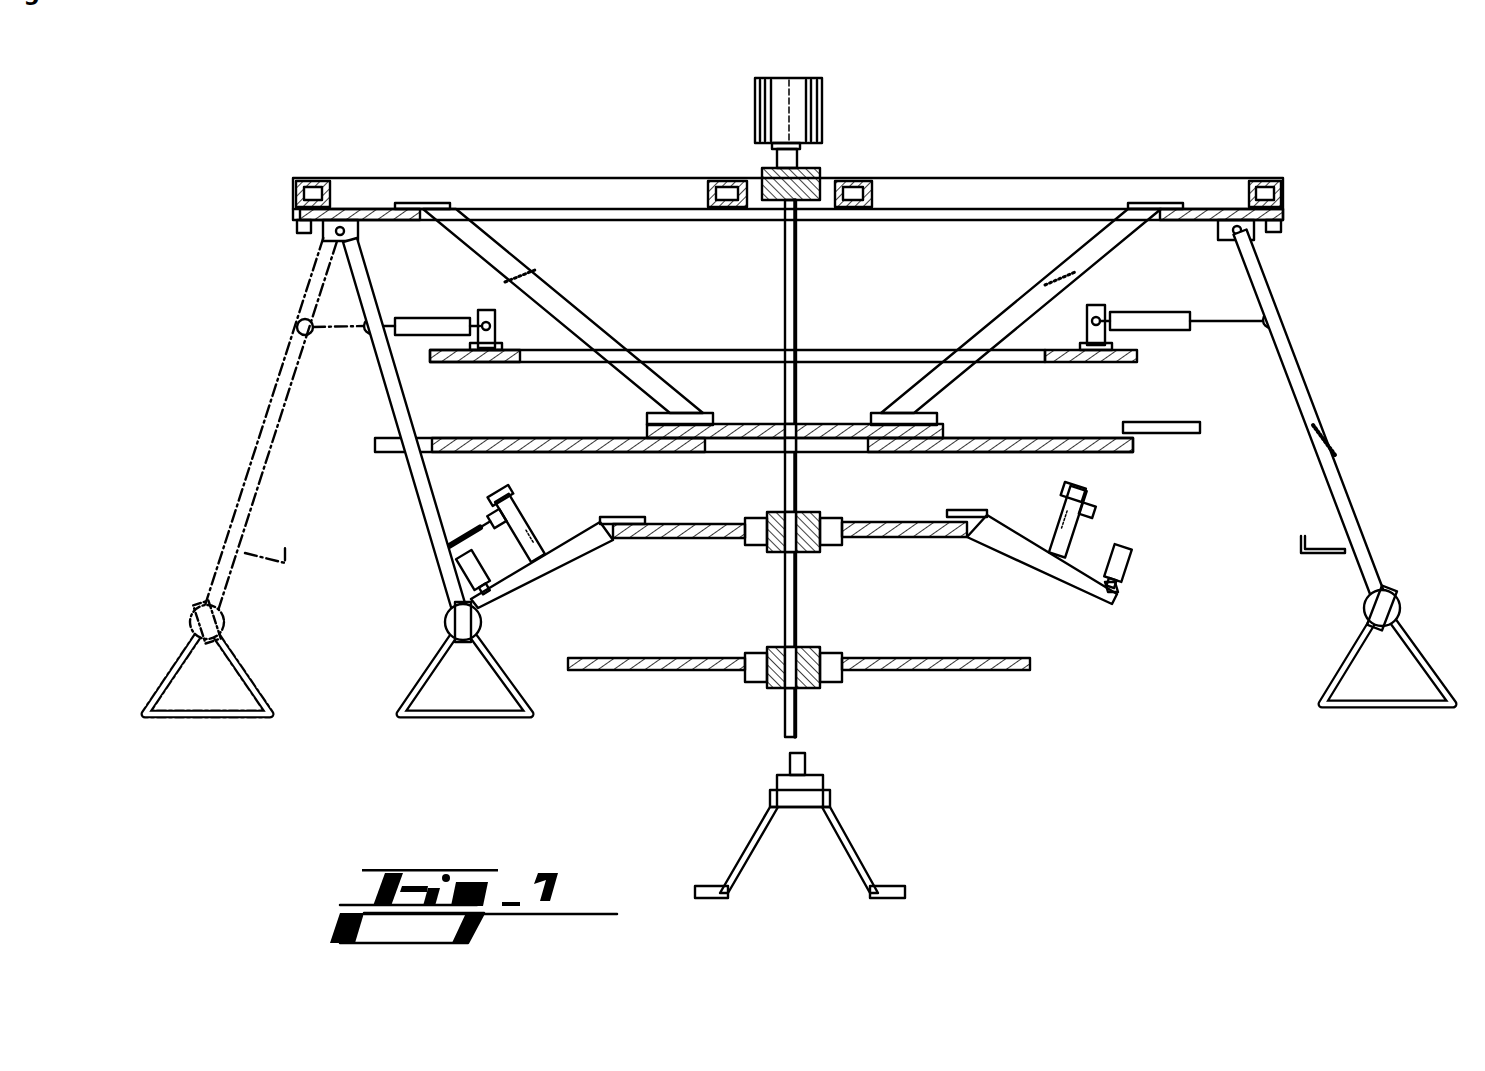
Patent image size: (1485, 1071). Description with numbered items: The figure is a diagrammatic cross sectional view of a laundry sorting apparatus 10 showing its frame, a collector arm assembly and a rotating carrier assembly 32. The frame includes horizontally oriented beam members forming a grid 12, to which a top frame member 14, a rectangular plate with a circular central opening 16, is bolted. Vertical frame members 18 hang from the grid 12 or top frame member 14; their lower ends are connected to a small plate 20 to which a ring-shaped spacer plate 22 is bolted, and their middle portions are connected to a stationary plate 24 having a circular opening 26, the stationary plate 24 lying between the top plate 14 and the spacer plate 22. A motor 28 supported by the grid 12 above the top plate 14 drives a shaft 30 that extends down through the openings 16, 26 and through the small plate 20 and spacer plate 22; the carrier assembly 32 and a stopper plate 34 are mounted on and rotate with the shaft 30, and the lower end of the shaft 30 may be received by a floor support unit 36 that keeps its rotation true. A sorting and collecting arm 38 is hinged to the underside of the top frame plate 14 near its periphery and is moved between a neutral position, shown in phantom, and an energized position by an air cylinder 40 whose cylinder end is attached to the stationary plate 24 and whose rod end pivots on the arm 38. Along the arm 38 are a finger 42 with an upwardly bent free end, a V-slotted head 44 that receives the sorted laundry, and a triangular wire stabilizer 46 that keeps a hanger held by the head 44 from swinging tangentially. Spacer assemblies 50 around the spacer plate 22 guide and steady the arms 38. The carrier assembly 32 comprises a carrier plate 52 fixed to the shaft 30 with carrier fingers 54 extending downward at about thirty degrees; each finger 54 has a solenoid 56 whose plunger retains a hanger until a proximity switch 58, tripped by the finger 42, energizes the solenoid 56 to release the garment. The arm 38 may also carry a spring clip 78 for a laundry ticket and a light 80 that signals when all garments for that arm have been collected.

The laundry sorting apparatus 10 is at (997, 145).
The grid 12 is at (1266, 176).
The top frame member 14 is at (292, 226).
The circular central opening 16 is at (1150, 220).
The vertical frame members 18 is at (553, 288).
The small plate 20 is at (947, 422).
The spacer plate 22 is at (975, 452).
The stationary plate 24 is at (1040, 362).
The circular opening 26 is at (925, 348).
The motor 28 is at (755, 108).
The shaft 30 is at (798, 283).
The carrier assembly 32 is at (972, 672).
The stopper plate 34 is at (1083, 585).
The floor support unit 36 is at (833, 800).
The sorting and collecting arm 38 is at (1312, 399).
The air cylinder 40 is at (1150, 312).
The finger 42 is at (1300, 548).
The head 44 is at (1365, 610).
The stabilizer 46 is at (1322, 695).
The spacer assembly 50 is at (1180, 422).
The carrier plate 52 is at (855, 538).
The carrier finger 54 is at (1035, 600).
The solenoid 56 is at (1130, 562).
The proximity switch 58 is at (1083, 487).
The spring clip 78 is at (1328, 442).
The light 80 is at (1275, 230).